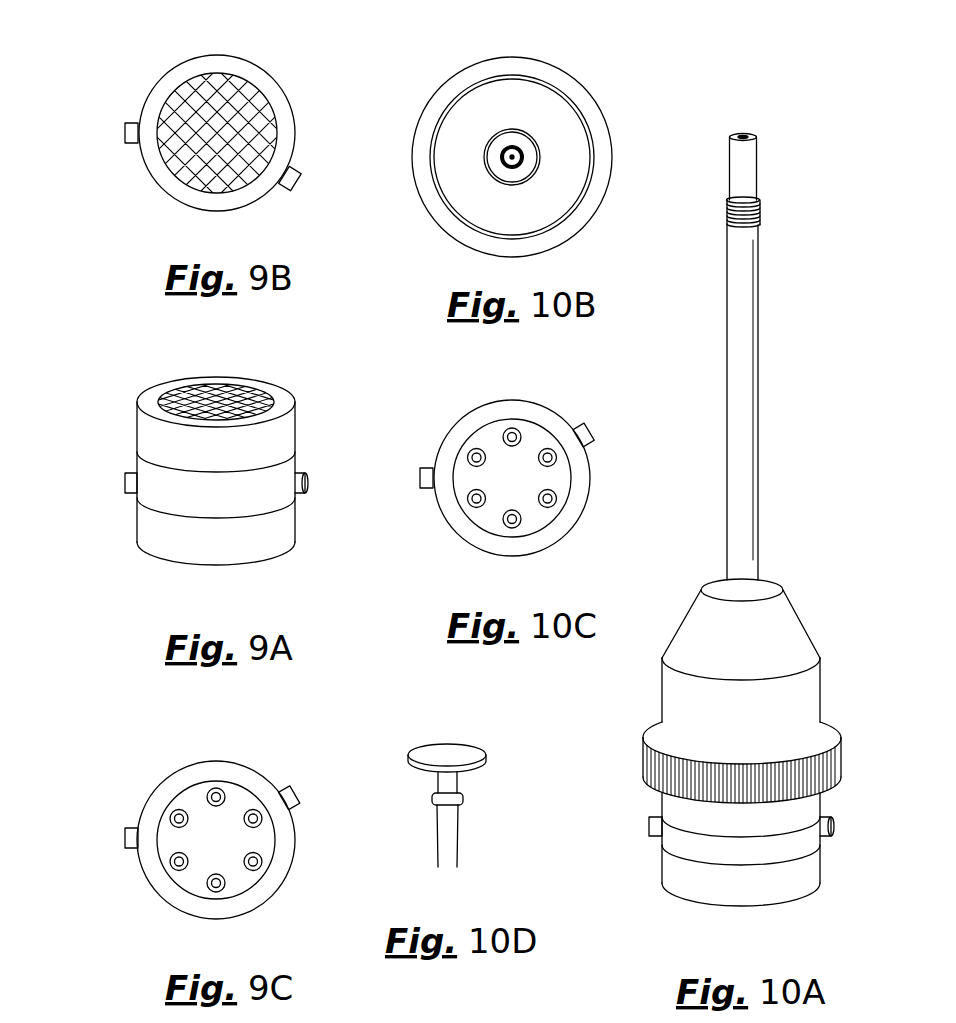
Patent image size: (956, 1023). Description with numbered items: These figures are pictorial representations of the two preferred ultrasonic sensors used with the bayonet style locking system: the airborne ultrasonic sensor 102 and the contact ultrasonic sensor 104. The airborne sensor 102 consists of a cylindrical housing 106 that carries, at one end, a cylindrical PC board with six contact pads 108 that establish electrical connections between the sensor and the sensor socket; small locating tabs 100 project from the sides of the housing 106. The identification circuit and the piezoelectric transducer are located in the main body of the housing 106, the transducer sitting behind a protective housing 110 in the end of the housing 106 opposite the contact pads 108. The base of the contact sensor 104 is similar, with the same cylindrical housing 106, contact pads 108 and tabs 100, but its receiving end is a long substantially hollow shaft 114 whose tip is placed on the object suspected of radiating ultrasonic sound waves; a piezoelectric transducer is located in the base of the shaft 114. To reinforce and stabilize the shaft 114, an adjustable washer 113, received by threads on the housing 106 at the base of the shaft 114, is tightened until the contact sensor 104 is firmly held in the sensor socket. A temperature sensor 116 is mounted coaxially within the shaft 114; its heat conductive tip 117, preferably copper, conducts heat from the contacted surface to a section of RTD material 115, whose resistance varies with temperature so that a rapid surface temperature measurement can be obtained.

In FIG. 9B, the locating tab 100 is at (125, 130).
In FIG. 9A, the locating tab 100 is at (125, 478).
In FIG. 10C, the locating tab 100 is at (594, 433).
In FIG. 9C, the locating tab 100 is at (297, 795).
In FIG. 10A, the locating tab 100 is at (649, 825).
In FIG. 9A, the airborne ultrasonic sensor 102 is at (217, 486).
In FIG. 10A, the contact ultrasonic sensor 104 is at (730, 560).
In FIG. 9A, the cylindrical housing 106 is at (288, 434).
In FIG. 10A, the cylindrical housing 106 is at (812, 872).
In FIG. 10C, the contact pads 108 is at (528, 436).
In FIG. 9C, the contact pads 108 is at (234, 797).
In FIG. 9B, the protective housing 110 is at (226, 93).
In FIG. 9A, the protective housing 110 is at (243, 396).
In FIG. 10A, the adjustable washer 113 is at (640, 760).
In FIG. 10A, the hollow shaft 114 is at (727, 347).
In FIG. 10D, the RTD material 115 is at (462, 795).
In FIG. 10B, the temperature sensor 116 is at (514, 154).
In FIG. 10D, the tip 117 is at (465, 746).